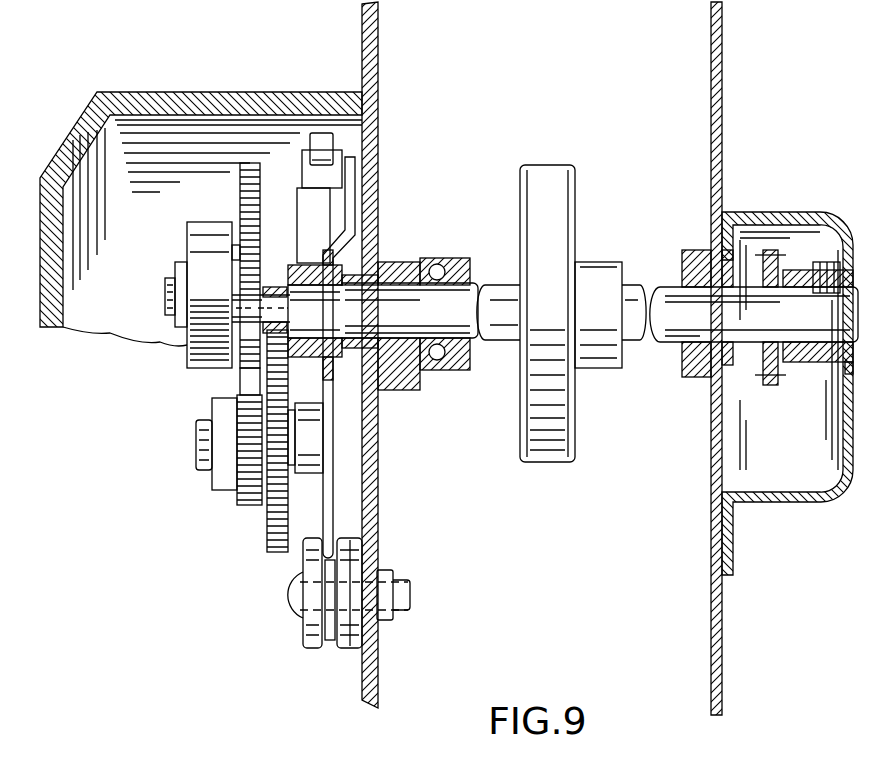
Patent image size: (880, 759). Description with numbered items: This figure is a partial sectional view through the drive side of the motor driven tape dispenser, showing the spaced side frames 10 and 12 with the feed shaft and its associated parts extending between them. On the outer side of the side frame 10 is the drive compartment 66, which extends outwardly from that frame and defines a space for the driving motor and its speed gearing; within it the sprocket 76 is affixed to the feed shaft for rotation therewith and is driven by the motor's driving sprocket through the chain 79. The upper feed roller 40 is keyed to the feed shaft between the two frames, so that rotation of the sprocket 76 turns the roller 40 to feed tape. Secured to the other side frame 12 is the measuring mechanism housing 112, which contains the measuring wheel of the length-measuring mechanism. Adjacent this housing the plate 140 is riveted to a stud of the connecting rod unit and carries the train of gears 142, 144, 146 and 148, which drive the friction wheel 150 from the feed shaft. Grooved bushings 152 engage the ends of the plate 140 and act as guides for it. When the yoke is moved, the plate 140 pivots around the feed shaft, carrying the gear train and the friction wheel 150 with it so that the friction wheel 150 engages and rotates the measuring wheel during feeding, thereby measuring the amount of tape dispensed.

The side frame 10 is at (722, 63).
The side frame 12 is at (362, 30).
The upper feed roller 40 is at (556, 209).
The drive compartment 66 is at (762, 214).
The sprocket 76 is at (778, 250).
The chain 79 is at (680, 333).
The measuring mechanism housing 112 is at (200, 72).
The plate 140 is at (333, 478).
The gear 142 is at (272, 287).
The gear 144 is at (268, 549).
The gear 146 is at (240, 489).
The gear 148 is at (240, 178).
The friction wheel 150 is at (190, 236).
The grooved bushings 152 is at (328, 630).